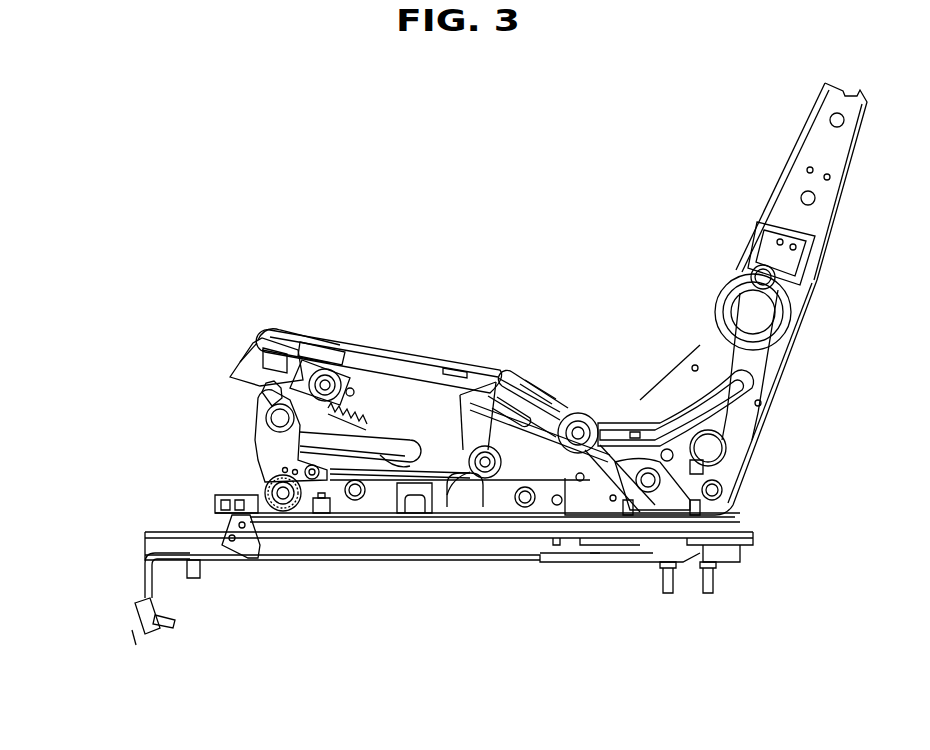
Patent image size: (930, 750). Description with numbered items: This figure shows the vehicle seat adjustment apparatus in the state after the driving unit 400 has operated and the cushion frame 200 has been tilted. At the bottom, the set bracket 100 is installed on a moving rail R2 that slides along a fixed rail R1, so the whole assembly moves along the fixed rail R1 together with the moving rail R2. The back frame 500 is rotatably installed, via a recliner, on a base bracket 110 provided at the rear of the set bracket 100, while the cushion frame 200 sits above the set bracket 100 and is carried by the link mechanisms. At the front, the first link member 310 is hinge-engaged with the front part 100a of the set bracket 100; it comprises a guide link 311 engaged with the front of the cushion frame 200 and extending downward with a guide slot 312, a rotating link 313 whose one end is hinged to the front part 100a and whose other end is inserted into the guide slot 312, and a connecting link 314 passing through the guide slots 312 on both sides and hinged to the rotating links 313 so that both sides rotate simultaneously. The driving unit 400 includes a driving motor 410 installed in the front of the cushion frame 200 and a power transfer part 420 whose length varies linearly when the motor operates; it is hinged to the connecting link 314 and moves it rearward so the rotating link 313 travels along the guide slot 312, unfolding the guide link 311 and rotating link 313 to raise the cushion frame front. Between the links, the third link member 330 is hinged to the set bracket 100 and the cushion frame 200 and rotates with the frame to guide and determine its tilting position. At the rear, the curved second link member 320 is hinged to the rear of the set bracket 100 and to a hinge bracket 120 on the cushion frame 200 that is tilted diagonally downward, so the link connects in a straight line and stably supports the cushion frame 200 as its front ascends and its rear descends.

The back frame 500 is at (792, 203).
The base bracket 110 is at (768, 378).
The second link member 320 is at (703, 412).
The cushion frame 200 is at (378, 338).
The third link member 330 is at (475, 417).
The hinge bracket 120 is at (527, 393).
The driving unit 400 is at (285, 304).
The driving motor 410 is at (302, 357).
The power transfer part 420 is at (357, 352).
The first link member 310 is at (177, 423).
The guide link 311 is at (253, 377).
The guide slot 312 is at (260, 387).
The rotating link 313 is at (218, 451).
The connecting link 314 is at (377, 445).
The front part of the set bracket 100a is at (308, 503).
The set bracket 100 is at (463, 518).
The fixed rail R1 is at (203, 543).
The moving rail R2 is at (595, 525).